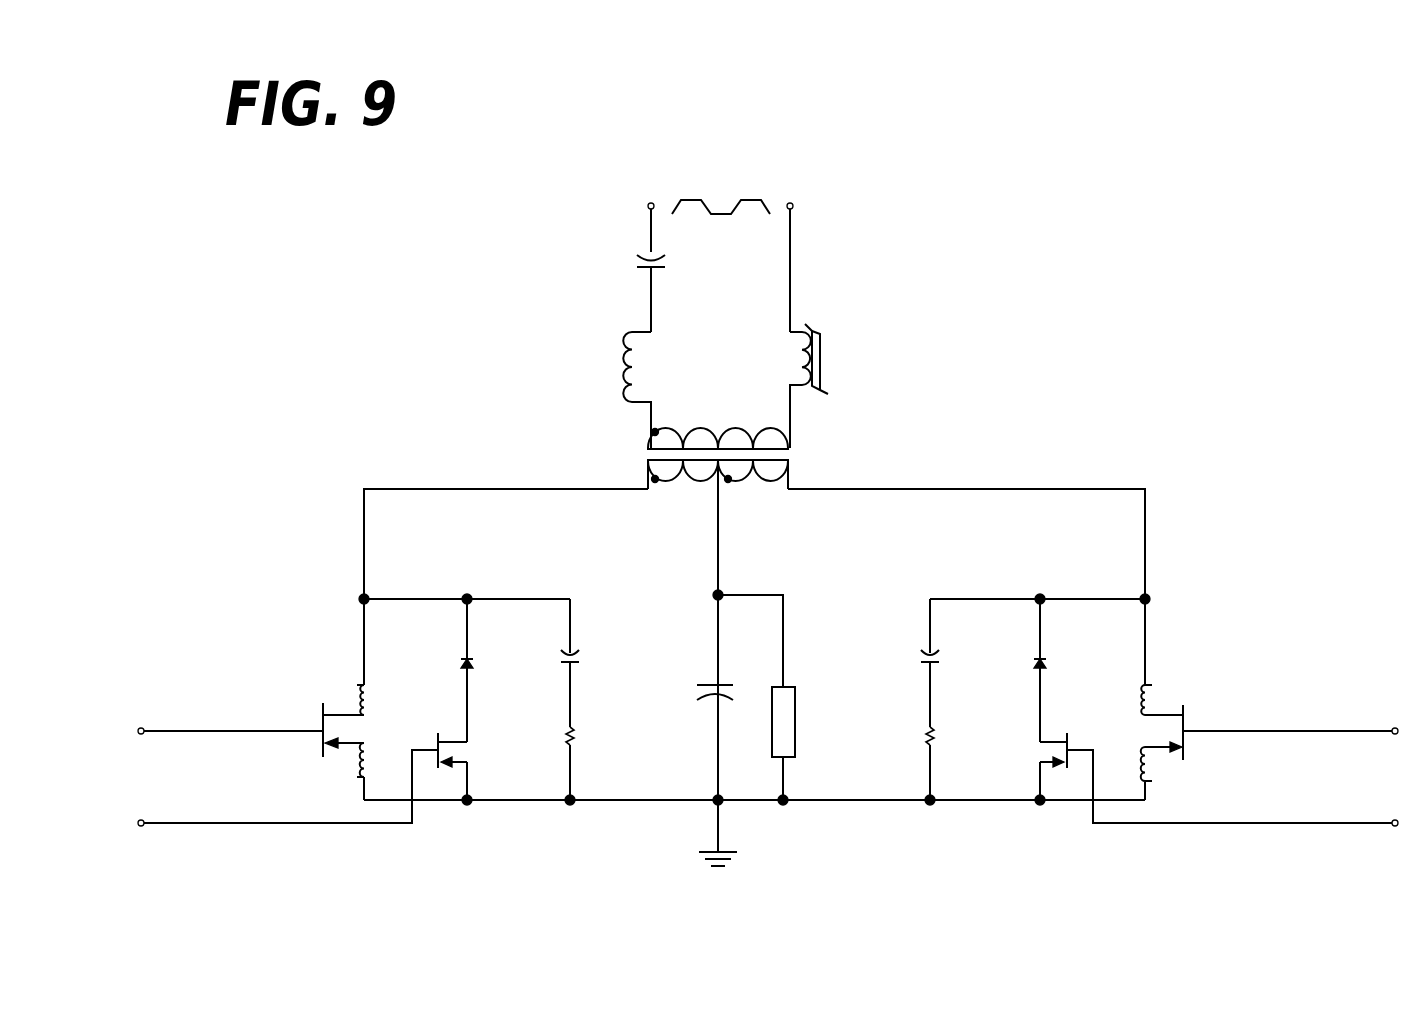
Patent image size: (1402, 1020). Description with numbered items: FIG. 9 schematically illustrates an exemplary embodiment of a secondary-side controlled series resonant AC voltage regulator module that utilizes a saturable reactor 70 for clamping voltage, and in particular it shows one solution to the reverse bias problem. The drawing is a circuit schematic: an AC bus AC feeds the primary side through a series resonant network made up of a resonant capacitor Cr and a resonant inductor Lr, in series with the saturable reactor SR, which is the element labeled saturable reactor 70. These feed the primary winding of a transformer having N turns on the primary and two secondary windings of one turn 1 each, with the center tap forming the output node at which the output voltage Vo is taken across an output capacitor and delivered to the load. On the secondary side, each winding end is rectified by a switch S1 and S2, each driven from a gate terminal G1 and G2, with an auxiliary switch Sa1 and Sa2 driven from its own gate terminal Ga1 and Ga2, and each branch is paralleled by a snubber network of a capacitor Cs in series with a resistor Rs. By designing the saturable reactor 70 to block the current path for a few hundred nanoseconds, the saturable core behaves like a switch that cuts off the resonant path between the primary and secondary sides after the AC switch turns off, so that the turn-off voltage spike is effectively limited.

The saturable reactor 70 is at (833, 327).
The saturable reactor winding SR is at (831, 390).
The AC bus input AC is at (720, 266).
The resonant capacitor Cr is at (632, 287).
The resonant inductor Lr is at (620, 390).
The transformer primary winding (N turns) N is at (718, 428).
The transformer secondary windings (1 turn each) 1 is at (718, 488).
The output capacitor / output voltage Vo is at (698, 670).
The load resistor load is at (790, 697).
The snubber capacitor Cs is at (750, 663).
The snubber resistor Rs is at (750, 763).
The synchronous rectifier switch 1 S1 is at (1170, 742).
The synchronous rectifier switch 2 S2 is at (334, 742).
The auxiliary switch 1 Sa1 is at (1025, 699).
The auxiliary switch 2 Sa2 is at (483, 699).
The gate terminal of S1 G1 is at (1290, 716).
The gate terminal of S2 G2 is at (230, 715).
The gate terminal of Sa1 Ga1 is at (1232, 788).
The gate terminal of Sa2 Ga2 is at (288, 788).